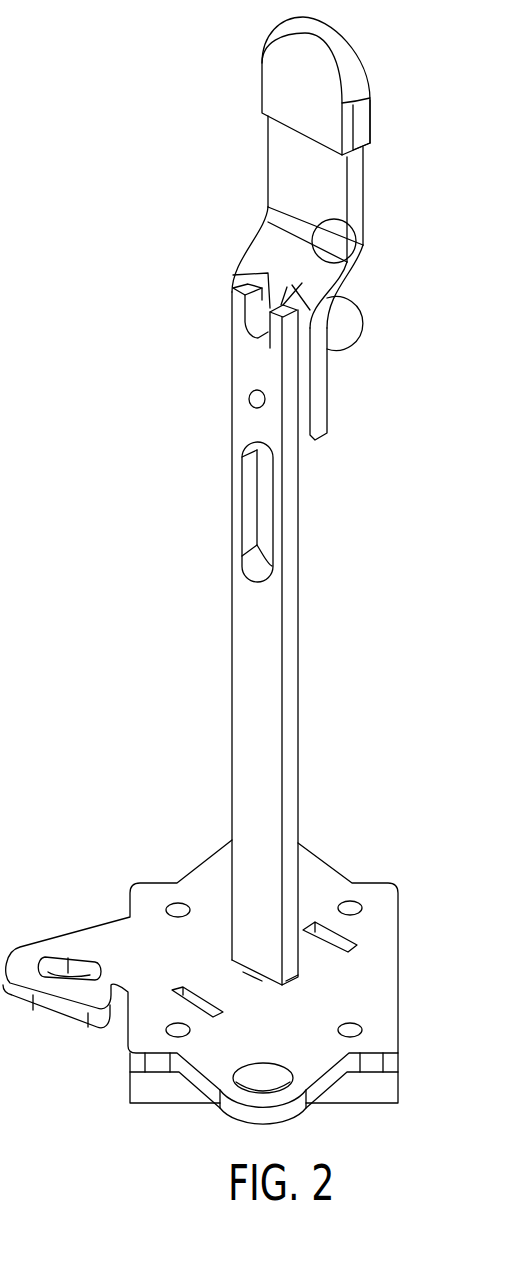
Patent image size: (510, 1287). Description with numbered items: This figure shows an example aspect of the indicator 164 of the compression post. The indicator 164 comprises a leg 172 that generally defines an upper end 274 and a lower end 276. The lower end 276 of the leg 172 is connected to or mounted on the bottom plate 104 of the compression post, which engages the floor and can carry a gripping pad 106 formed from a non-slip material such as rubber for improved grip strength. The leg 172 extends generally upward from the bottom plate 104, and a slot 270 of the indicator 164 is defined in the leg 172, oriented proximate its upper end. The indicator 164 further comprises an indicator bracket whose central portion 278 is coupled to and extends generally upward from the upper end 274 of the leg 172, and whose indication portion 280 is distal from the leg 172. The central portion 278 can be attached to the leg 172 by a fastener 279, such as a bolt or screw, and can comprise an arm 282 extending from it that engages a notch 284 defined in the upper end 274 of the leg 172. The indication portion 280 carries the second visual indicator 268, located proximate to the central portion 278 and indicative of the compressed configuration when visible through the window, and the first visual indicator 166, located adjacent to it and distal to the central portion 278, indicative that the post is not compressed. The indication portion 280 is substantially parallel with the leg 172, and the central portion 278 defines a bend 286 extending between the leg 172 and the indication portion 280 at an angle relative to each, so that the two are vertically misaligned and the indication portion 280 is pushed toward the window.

The indicator 164 is at (148, 121).
The first visual indicator 166 is at (263, 70).
The indication portion 280 is at (384, 121).
The second visual indicator 268 is at (290, 168).
The central portion 278 is at (236, 212).
The bend 286 is at (285, 263).
The arm 282 is at (258, 315).
The upper end 274 is at (226, 317).
The notch 284 is at (270, 330).
The fastener 279 is at (256, 399).
The slot 270 is at (256, 502).
The leg 172 is at (308, 664).
The lower end 276 is at (258, 968).
The bottom plate 104 is at (370, 985).
The gripping pad 106 is at (370, 1089).